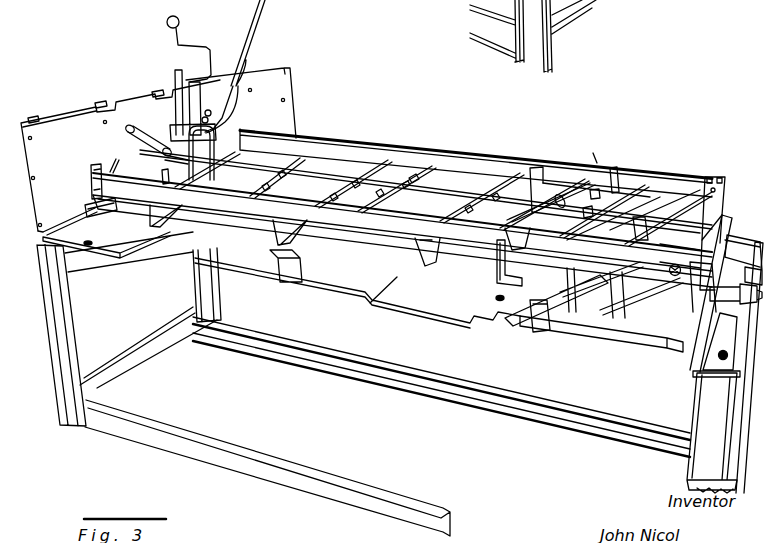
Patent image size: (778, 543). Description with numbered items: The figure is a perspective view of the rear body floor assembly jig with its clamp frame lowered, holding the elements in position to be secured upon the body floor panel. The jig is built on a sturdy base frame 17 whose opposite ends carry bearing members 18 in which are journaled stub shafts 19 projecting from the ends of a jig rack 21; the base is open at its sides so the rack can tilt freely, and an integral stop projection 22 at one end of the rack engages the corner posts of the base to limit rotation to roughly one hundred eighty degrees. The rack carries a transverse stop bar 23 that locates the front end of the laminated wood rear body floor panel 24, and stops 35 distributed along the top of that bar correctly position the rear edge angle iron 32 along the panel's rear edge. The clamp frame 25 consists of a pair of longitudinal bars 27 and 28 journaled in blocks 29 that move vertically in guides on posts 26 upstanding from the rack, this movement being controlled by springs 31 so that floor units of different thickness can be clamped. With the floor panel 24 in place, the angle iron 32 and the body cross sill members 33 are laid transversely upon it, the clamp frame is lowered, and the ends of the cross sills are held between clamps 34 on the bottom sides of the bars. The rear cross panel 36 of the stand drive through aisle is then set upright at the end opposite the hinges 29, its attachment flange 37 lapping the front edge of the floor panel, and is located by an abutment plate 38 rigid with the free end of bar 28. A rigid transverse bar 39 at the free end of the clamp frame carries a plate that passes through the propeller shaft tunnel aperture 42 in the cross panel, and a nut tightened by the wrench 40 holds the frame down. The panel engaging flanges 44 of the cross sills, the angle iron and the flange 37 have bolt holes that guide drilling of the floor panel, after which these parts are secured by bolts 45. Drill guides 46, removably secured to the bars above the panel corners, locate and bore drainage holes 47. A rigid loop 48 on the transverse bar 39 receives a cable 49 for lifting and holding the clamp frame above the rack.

The base frame 17 is at (55, 337).
The bearing members 18 is at (720, 330).
The stub shafts 19 is at (757, 303).
The jig rack 21 is at (728, 235).
The stop projection 22 is at (740, 250).
The transverse stop bar 23 is at (537, 315).
The rear body floor panel 24 is at (425, 303).
The clamp frame 25 is at (493, 148).
The posts 26 is at (726, 214).
The longitudinal bar 27 is at (432, 148).
The longitudinal bar 28 is at (364, 230).
The blocks 29 is at (727, 192).
The springs 31 is at (719, 176).
The rear edge angle iron 32 is at (497, 310).
The body cross sill members 33 is at (366, 188).
The clamps 34 is at (162, 205).
The stops 35 is at (543, 292).
The rear cross panel 36 is at (66, 127).
The attachment flange 37 is at (67, 227).
The abutment plate 38 is at (96, 166).
The rigid transverse bar 39 is at (258, 128).
The wrench 40 is at (192, 47).
The propeller shaft tunnel aperture 42 is at (182, 84).
The panel engaging flanges 44 is at (284, 176).
The bolts 45 is at (416, 175).
The drill guides 46 is at (112, 207).
The holes 47 is at (495, 298).
The rigid loop 48 is at (216, 128).
The cable 49 is at (252, 47).